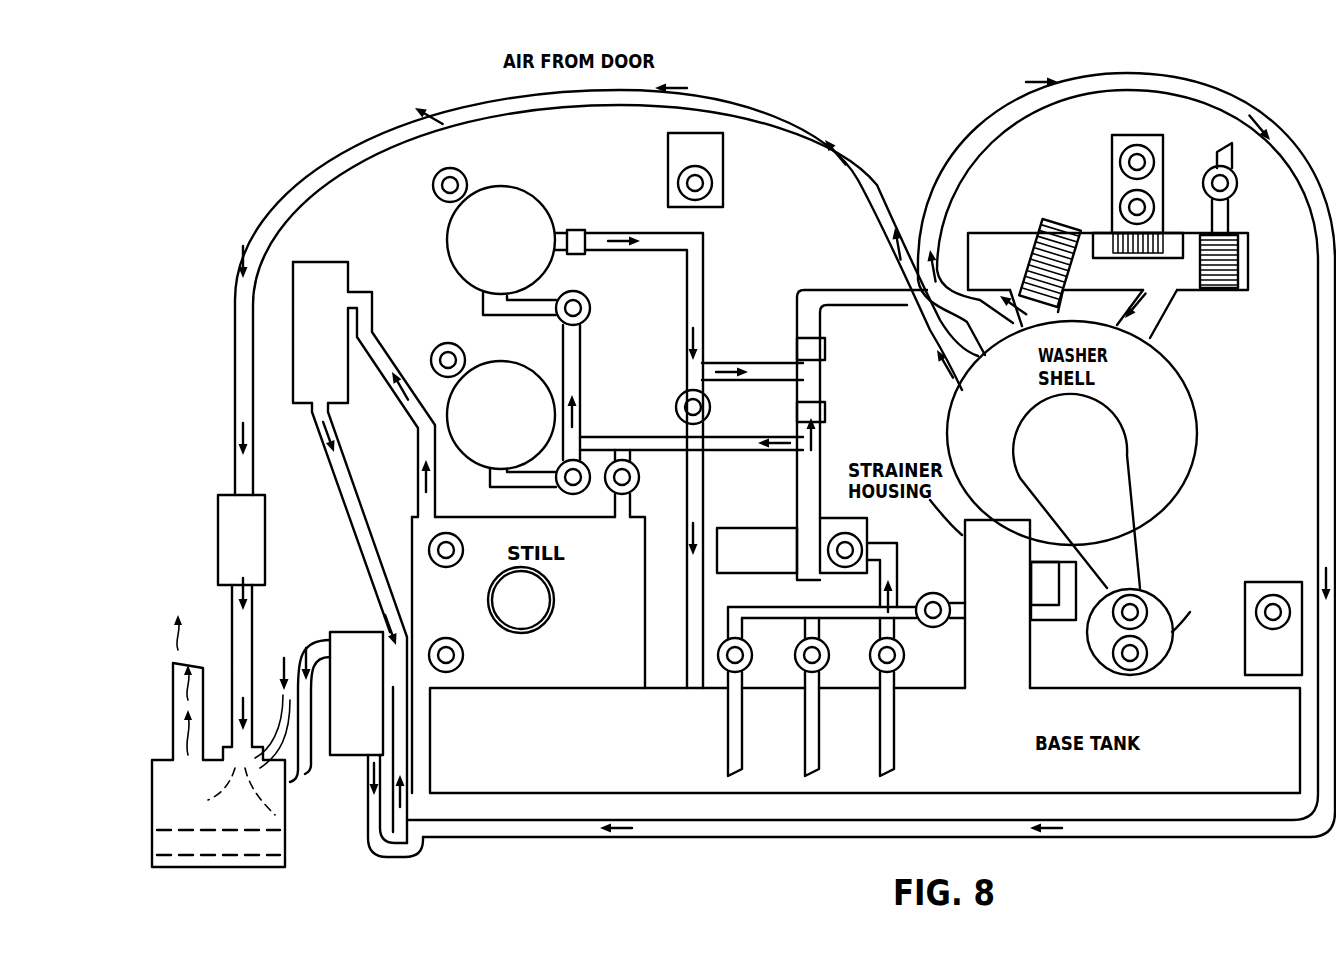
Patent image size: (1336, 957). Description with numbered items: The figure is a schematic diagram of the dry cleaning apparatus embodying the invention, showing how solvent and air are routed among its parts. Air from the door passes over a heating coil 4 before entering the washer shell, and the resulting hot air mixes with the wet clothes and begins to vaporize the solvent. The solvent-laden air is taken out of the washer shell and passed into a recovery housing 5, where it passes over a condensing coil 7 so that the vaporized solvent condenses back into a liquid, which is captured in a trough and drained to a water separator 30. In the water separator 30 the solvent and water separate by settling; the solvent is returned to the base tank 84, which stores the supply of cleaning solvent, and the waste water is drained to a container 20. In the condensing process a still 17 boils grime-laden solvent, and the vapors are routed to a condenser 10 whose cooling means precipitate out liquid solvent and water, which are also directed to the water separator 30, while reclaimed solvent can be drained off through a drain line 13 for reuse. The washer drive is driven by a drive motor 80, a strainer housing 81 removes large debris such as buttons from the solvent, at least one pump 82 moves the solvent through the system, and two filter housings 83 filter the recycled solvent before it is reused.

The heating coil 4 is at (1240, 237).
The recovery housing 5 is at (968, 246).
The condensing coil 7 is at (1062, 225).
The condenser 10 is at (350, 270).
The drain line 13 is at (368, 800).
The still 17 is at (643, 541).
The container 20 is at (155, 757).
The water separator 30 is at (326, 641).
The drive motor 80 is at (1140, 590).
The strainer housing 81 is at (960, 585).
The pump 82 is at (758, 526).
The filter housings 83 is at (493, 360).
The base tank 84 is at (1158, 795).